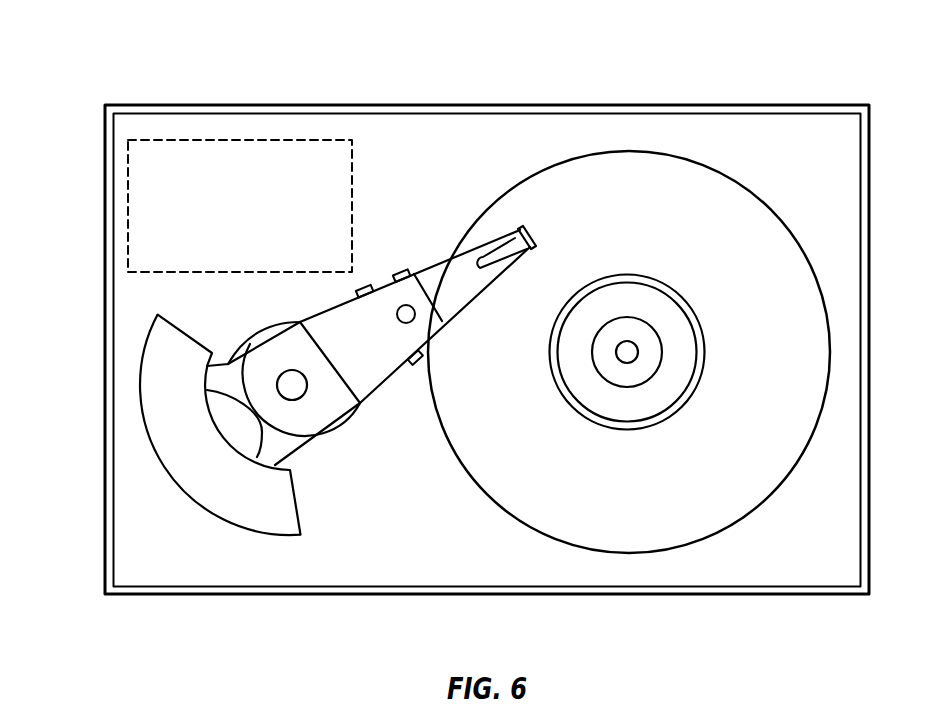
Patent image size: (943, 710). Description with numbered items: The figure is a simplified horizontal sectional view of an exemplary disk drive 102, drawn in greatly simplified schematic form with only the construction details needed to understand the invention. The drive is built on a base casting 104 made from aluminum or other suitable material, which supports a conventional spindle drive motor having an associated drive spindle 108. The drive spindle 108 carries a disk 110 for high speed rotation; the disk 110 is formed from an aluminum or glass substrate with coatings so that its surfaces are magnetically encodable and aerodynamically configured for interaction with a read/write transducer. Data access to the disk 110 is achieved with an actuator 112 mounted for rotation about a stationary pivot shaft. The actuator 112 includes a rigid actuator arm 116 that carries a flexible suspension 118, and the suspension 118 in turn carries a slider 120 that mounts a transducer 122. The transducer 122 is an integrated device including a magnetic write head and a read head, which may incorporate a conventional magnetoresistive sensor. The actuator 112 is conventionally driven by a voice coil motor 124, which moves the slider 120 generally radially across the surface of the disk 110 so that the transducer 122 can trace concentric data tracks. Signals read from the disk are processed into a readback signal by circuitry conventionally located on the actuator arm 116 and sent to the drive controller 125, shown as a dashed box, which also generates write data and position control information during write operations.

The disk drive 102 is at (124, 63).
The base casting 104 is at (427, 104).
The drive controller 125 is at (356, 172).
The disk 110 is at (777, 366).
The drive spindle 108 is at (627, 363).
The voice coil motor 124 is at (193, 497).
The flexible suspension 118 is at (400, 352).
The actuator 112 is at (317, 410).
The actuator arm 116 is at (365, 373).
The slider 120 is at (527, 249).
The transducer 122 is at (527, 230).